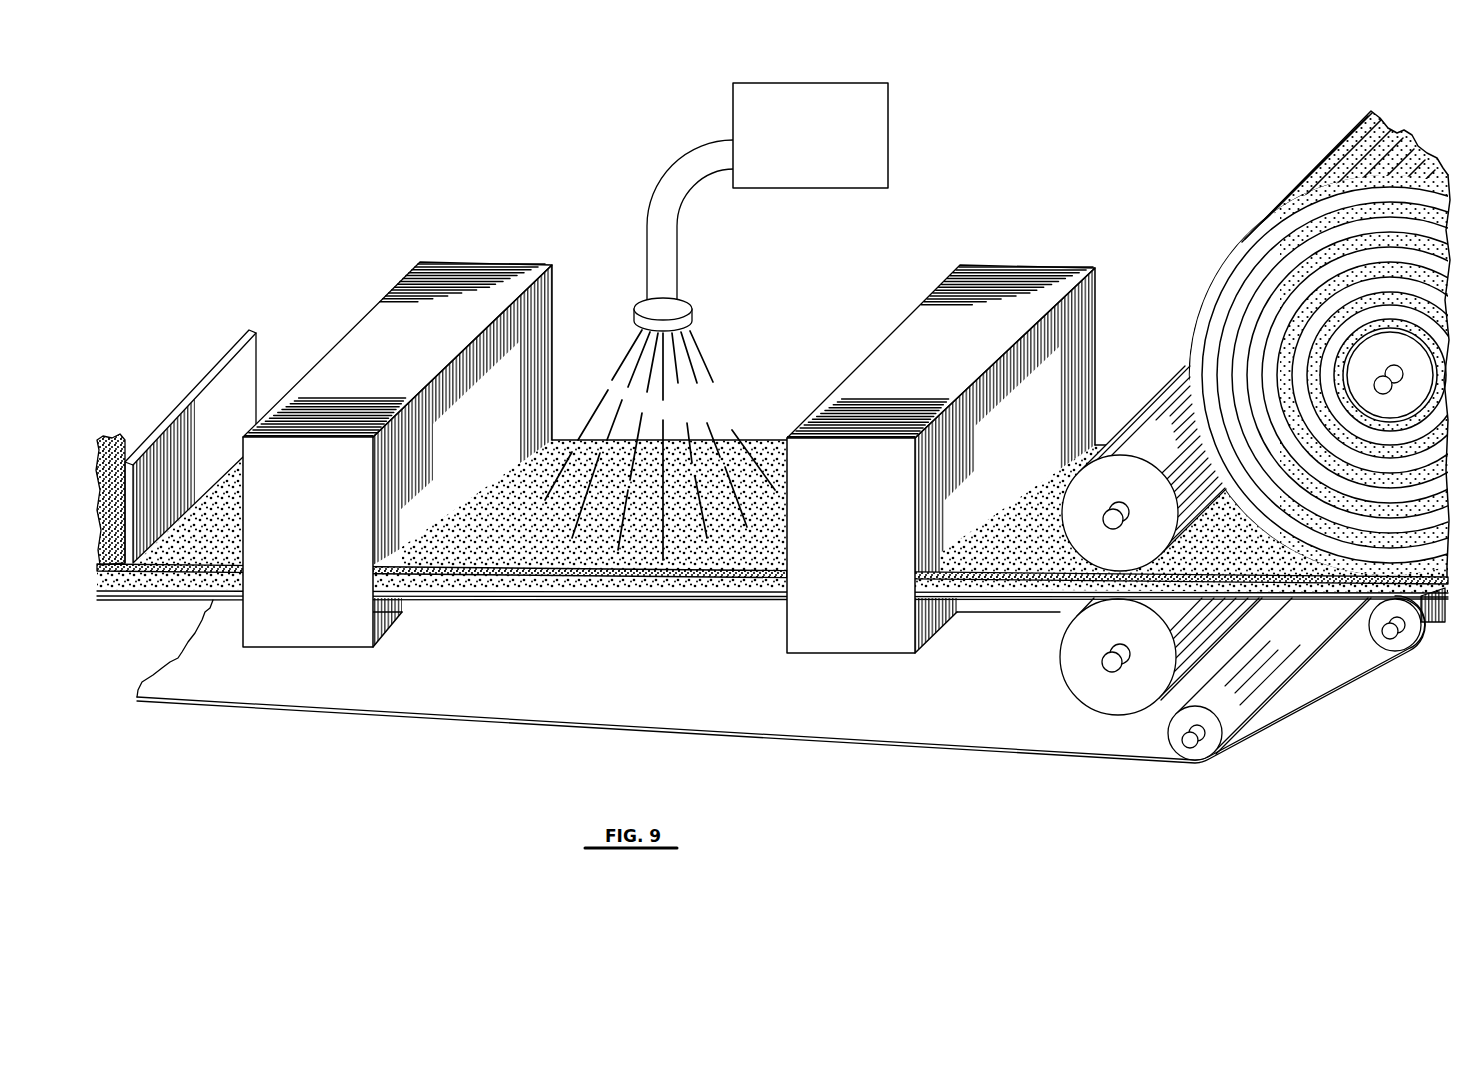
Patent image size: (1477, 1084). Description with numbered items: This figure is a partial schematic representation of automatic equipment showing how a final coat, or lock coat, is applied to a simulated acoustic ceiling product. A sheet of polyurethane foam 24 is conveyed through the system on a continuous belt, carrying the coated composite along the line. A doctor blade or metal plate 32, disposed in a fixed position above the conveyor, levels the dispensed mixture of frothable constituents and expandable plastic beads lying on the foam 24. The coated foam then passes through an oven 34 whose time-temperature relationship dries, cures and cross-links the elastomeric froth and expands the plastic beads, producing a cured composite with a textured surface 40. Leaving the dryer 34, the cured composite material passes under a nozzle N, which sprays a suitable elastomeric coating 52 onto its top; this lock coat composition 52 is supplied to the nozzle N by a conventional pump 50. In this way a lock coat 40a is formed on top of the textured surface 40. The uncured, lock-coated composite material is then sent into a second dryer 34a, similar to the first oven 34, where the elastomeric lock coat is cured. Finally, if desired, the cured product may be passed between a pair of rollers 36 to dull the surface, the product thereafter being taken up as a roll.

The sheet of polyurethane foam 24 is at (462, 585).
The doctor blade or metal plate 32 is at (262, 357).
The oven 34 is at (447, 282).
The dryer 34a is at (1033, 287).
The rollers 36 is at (1155, 425).
The textured surface 40 is at (428, 570).
The lock coat 40a is at (1007, 550).
The pump 50 is at (862, 120).
The nozzle N is at (678, 308).
The elastomeric coating 52 is at (701, 415).